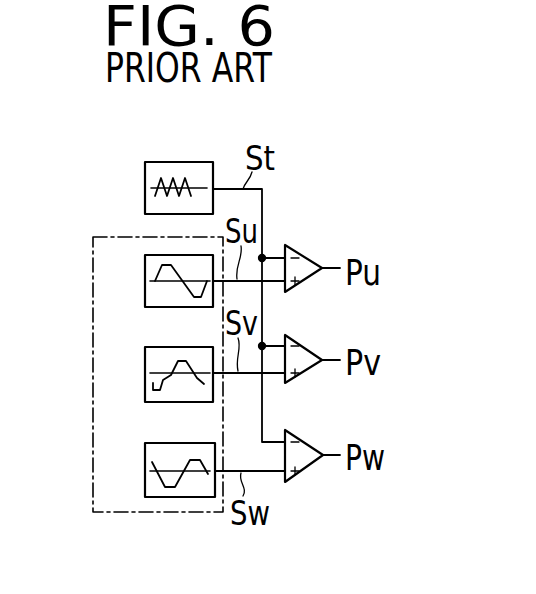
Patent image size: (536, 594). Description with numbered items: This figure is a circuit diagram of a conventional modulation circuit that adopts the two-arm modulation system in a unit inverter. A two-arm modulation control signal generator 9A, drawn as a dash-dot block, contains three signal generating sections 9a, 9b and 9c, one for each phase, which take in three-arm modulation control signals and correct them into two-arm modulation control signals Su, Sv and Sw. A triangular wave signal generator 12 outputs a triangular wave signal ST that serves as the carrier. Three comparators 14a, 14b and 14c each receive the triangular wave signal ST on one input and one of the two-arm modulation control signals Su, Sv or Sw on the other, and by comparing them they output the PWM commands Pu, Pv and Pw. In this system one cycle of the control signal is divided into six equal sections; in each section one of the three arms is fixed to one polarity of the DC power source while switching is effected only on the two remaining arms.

The triangular wave signal generator 12 is at (145, 190).
The two-arm modulation control signal generator 9A is at (93, 268).
The signal generating section 9a is at (145, 284).
The signal generating section 9b is at (145, 362).
The signal generating section 9c is at (145, 456).
The comparator 14a is at (302, 250).
The comparator 14b is at (302, 342).
The comparator 14c is at (303, 440).